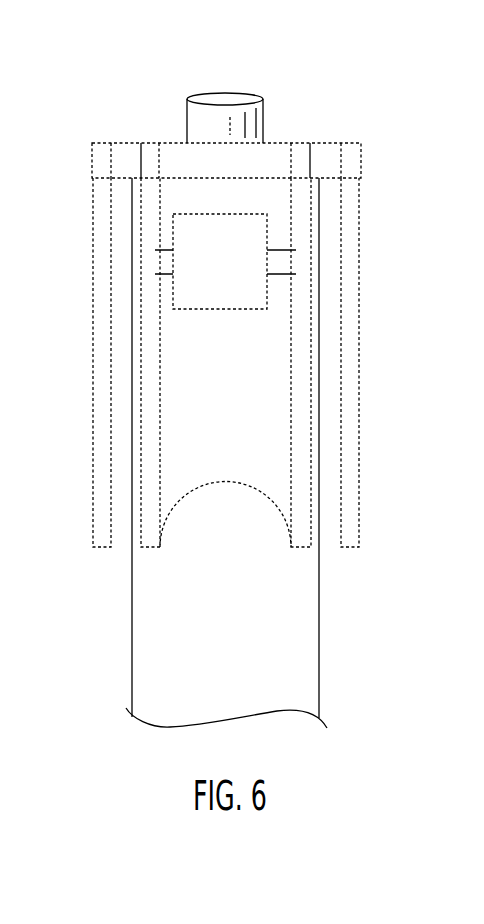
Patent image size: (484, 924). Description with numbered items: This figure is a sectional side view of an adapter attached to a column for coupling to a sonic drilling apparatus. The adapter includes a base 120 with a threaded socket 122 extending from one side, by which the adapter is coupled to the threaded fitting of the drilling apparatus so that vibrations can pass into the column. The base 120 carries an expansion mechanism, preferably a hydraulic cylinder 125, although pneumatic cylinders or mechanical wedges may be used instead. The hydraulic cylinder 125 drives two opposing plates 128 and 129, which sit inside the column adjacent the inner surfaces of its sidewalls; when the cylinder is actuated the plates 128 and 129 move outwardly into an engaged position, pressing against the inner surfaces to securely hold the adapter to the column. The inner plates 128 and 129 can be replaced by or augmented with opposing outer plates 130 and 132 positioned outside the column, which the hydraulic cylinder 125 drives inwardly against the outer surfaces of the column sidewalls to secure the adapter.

The base 120 is at (265, 168).
The threaded socket 122 is at (246, 95).
The hydraulic cylinder 125 is at (250, 251).
The plate 128 is at (150, 483).
The plate 129 is at (302, 433).
The plate 130 is at (100, 330).
The plate 132 is at (345, 284).